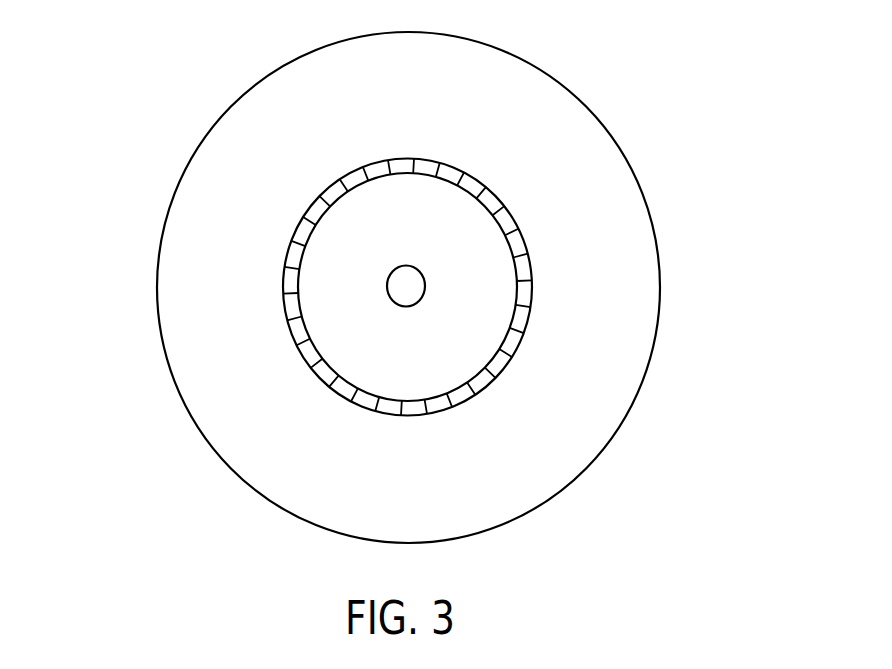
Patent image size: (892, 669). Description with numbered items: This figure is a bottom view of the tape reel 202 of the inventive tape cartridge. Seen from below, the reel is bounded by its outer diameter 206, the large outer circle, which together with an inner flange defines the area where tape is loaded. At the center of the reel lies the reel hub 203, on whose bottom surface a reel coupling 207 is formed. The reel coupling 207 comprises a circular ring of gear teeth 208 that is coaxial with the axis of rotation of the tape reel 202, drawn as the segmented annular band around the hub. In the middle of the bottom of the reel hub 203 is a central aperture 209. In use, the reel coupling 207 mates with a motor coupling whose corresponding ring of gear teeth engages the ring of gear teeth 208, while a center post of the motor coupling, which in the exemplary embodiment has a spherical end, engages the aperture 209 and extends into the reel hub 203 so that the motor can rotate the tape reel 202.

The tape reel 202 is at (237, 92).
The reel hub 203 is at (478, 313).
The outer diameter 206 is at (157, 277).
The reel coupling 207 is at (300, 352).
The ring of gear teeth 208 is at (495, 213).
The central aperture 209 is at (417, 290).